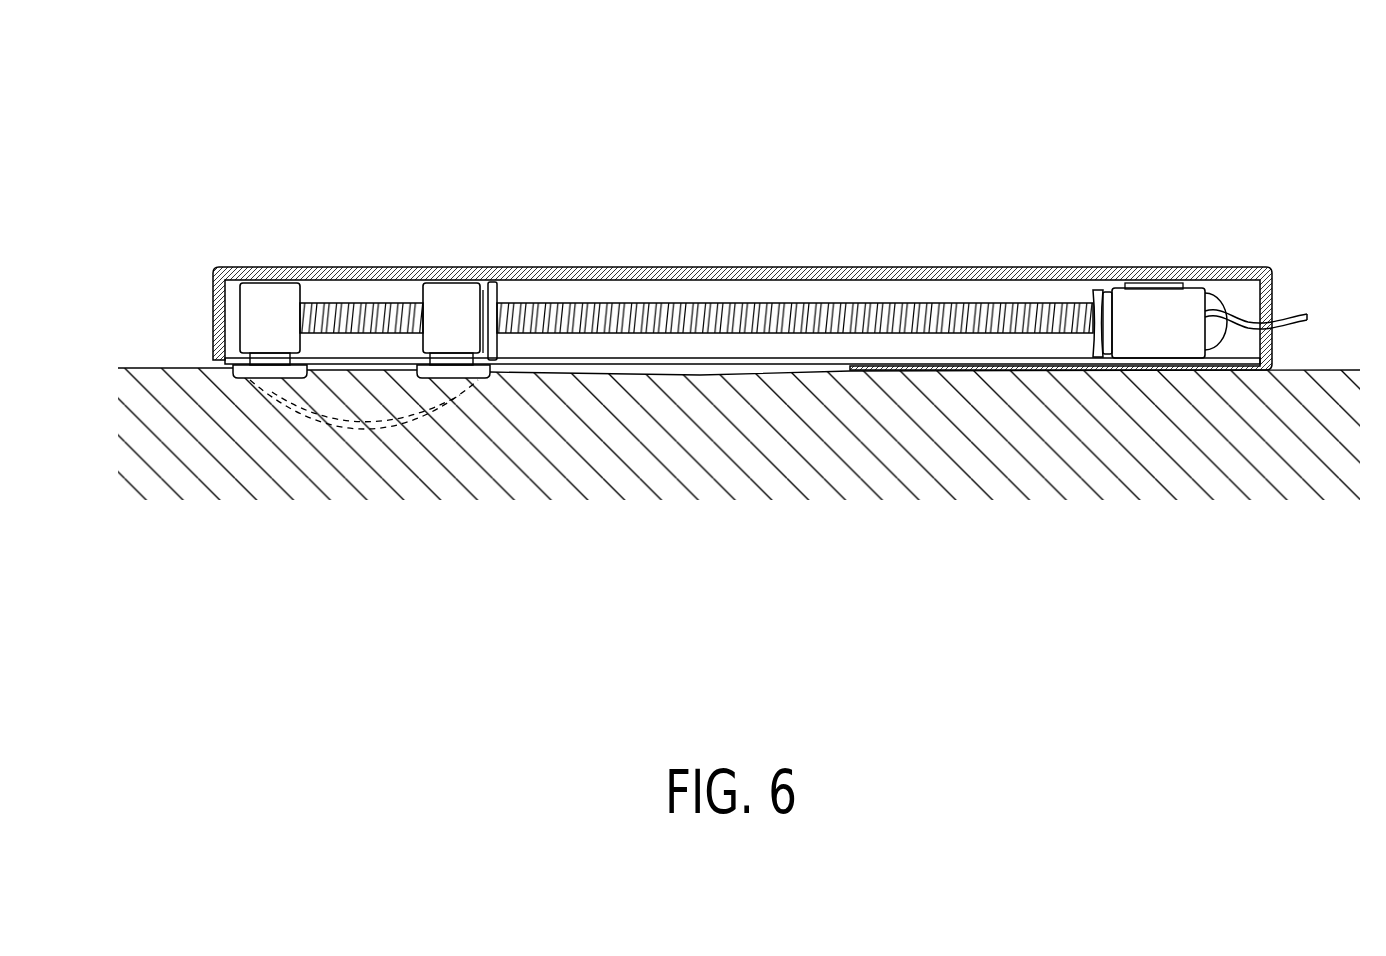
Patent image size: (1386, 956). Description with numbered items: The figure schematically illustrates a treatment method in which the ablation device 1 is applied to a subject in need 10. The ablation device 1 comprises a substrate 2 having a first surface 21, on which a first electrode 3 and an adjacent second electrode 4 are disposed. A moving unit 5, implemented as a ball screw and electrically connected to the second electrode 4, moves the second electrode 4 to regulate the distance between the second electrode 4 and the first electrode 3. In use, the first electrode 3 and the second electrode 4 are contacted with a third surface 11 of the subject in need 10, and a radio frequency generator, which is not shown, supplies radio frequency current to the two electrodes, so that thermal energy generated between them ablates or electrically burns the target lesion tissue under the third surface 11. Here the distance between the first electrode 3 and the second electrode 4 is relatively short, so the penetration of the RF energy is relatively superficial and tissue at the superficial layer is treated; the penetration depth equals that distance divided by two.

The ablation device 1 is at (737, 311).
The substrate 2 is at (1238, 295).
The first surface 21 is at (237, 365).
The first electrode 3 is at (250, 379).
The second electrode 4 is at (480, 379).
The moving unit 5 is at (852, 303).
The subject in need 10 is at (1073, 475).
The third surface 11 is at (1323, 368).